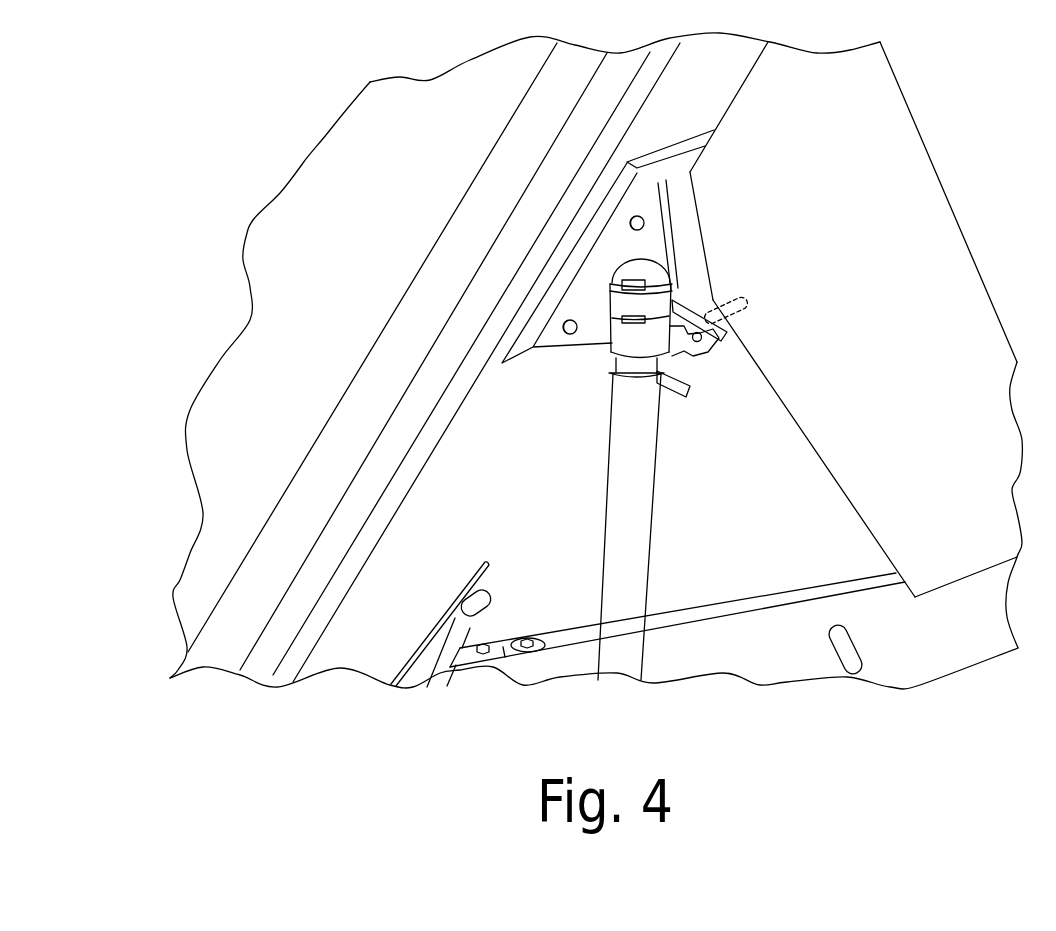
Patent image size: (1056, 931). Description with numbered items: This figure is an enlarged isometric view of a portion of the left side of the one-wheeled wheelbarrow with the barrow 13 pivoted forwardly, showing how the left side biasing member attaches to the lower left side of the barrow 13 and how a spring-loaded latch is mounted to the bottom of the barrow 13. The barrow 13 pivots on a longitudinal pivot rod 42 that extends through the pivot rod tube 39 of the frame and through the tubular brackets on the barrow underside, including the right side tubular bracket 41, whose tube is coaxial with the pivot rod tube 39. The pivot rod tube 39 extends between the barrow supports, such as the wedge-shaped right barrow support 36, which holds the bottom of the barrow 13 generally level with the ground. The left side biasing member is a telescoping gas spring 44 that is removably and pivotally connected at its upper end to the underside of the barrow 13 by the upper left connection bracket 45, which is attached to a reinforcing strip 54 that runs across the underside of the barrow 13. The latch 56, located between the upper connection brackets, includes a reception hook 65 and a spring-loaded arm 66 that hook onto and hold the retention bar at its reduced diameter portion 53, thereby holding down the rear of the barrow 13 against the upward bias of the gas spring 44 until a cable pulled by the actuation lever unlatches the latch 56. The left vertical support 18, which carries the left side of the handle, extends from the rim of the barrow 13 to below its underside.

The barrow 13 is at (377, 97).
The left vertical support 18 is at (955, 233).
The right barrow support 36 is at (740, 603).
The pivot rod tube 39 is at (430, 658).
The right side tubular bracket 41 is at (490, 602).
The longitudinal pivot rod 42 is at (463, 605).
The gas spring 44 is at (640, 480).
The upper left connection bracket 45 is at (600, 253).
The reduced diameter portion 53 is at (845, 655).
The reinforcing strip 54 is at (667, 165).
The latch 56 is at (700, 292).
The reception hook 65 is at (682, 397).
The spring-loaded arm 66 is at (707, 347).